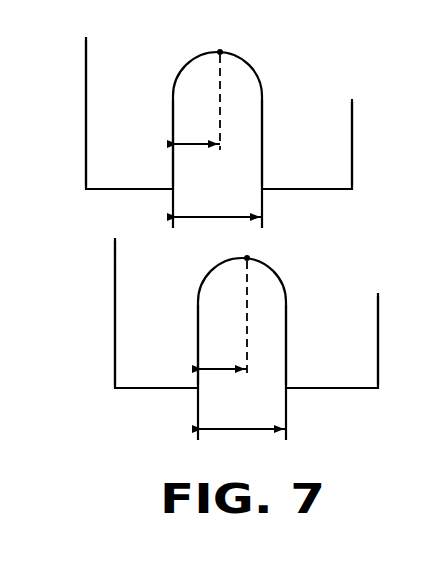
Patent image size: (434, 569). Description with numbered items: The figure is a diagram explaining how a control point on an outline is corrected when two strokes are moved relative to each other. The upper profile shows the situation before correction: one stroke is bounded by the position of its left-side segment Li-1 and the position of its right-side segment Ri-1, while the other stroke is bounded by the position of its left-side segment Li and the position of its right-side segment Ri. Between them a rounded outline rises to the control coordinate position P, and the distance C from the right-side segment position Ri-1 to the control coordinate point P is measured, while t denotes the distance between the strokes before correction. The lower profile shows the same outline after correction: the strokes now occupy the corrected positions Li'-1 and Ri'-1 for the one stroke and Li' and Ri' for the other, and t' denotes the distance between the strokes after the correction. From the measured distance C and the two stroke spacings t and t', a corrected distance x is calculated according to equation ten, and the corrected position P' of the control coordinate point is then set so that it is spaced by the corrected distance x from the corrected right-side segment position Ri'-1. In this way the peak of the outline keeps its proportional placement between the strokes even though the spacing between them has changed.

The control coordinate position P is at (218, 88).
The distance C is at (196, 131).
The distance between strokes before correction t is at (217, 202).
The position of left-side segment of one stroke Li-1 is at (80, 126).
The position of right-side segment of one stroke Ri-1 is at (150, 156).
The position of left-side segment of the other stroke Li is at (273, 158).
The position of right-side segment of the other stroke Ri is at (352, 159).
The corrected position of control coordinate point P' is at (251, 303).
The corrected distance x is at (222, 355).
The distance between strokes after correction t' is at (242, 417).
The corrected position of left-side segment of one stroke Li'-1 is at (105, 328).
The corrected position of right-side segment Ri'-1 is at (171, 360).
The corrected position of left-side segment of the other stroke Li' is at (302, 360).
The corrected position of right-side segment of the other stroke Ri' is at (378, 356).